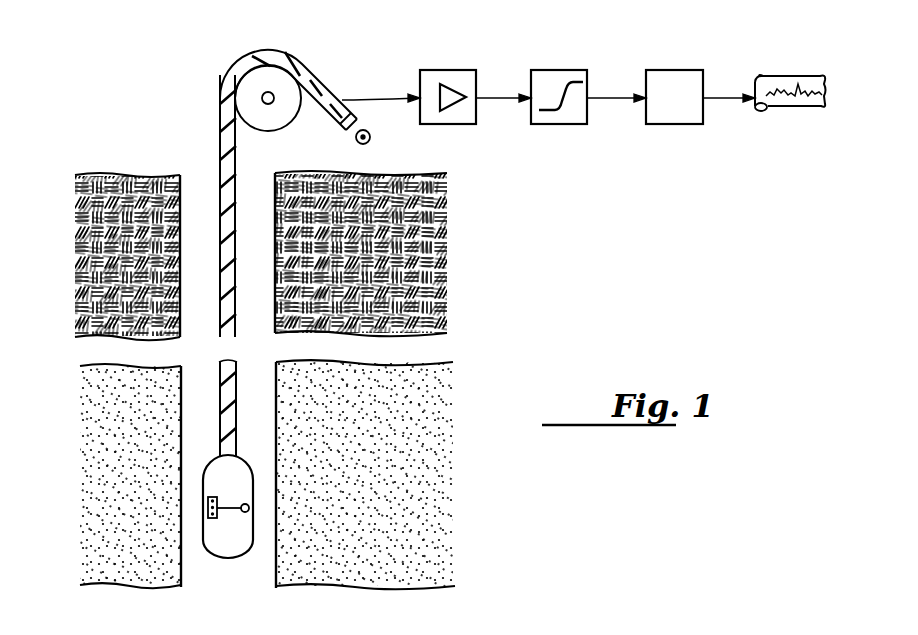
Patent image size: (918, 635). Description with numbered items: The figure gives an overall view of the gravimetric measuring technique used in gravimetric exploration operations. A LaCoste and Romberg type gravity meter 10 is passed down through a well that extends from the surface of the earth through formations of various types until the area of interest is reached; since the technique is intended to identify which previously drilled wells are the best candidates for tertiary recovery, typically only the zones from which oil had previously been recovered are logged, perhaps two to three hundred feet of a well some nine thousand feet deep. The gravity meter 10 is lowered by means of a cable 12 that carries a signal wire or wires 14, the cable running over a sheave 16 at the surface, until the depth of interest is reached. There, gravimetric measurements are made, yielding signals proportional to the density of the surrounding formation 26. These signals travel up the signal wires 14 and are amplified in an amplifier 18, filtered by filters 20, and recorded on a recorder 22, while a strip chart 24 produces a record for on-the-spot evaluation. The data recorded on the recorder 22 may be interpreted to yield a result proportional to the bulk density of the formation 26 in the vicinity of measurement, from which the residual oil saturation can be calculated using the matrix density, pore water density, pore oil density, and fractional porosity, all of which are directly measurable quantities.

The gravity meter 10 is at (232, 548).
The cable 12 is at (251, 58).
The signal wire 14 is at (229, 126).
The sheave 16 is at (278, 114).
The amplifier 18 is at (453, 72).
The filters 20 is at (556, 70).
The recorder 22 is at (673, 72).
The strip chart 24 is at (795, 75).
The formation 26 is at (460, 525).